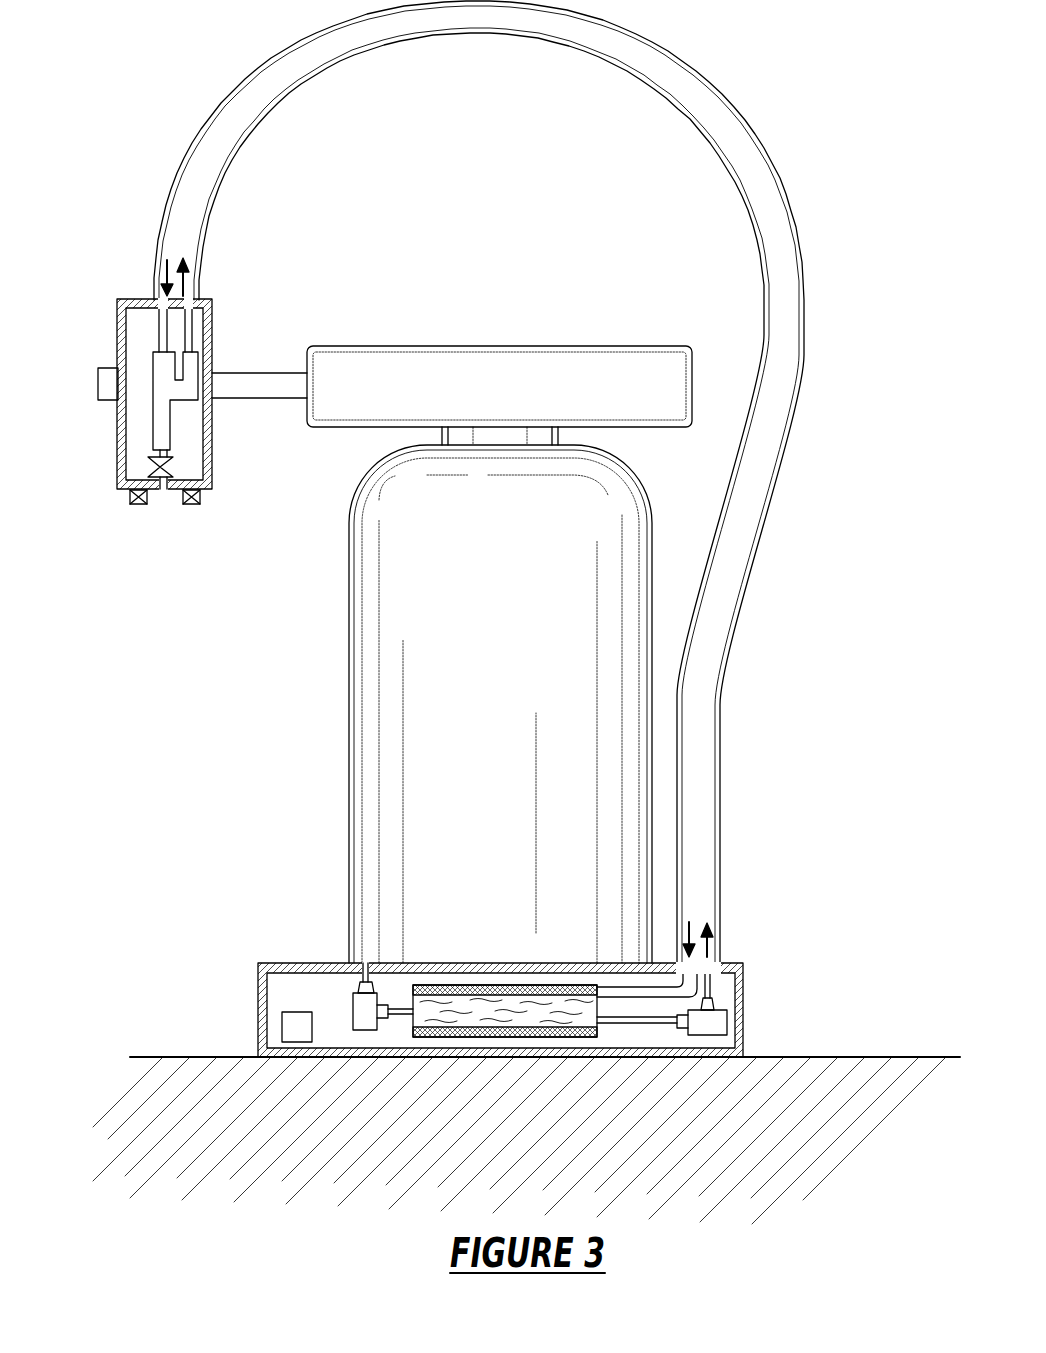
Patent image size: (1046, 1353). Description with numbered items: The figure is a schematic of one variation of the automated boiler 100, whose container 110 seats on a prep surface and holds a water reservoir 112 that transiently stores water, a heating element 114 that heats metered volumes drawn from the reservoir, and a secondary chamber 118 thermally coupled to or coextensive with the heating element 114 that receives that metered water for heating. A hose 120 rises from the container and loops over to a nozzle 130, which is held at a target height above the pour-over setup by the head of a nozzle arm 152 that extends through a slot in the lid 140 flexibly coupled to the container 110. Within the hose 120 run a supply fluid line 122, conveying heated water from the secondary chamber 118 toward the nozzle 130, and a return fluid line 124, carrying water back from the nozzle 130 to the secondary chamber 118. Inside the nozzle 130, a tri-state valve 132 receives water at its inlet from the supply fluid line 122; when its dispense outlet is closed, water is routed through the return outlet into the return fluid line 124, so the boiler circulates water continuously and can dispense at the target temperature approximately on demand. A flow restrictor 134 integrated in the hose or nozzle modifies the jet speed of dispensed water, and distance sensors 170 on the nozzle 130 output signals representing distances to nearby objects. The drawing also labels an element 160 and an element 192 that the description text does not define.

The automated boiler 100 is at (838, 100).
The container 110 is at (446, 704).
The water reservoir 112 is at (448, 796).
The heating element 114 is at (435, 1040).
The secondary chamber 118 is at (507, 1040).
The hose 120 is at (806, 304).
The supply fluid line 122 is at (158, 330).
The return fluid line 124 is at (194, 330).
The nozzle 130 is at (117, 468).
The valve 132 is at (153, 356).
The flow restrictor 134 is at (176, 461).
The lid 140 is at (614, 346).
The nozzle arm 152 is at (262, 372).
The controller 160 is at (282, 1025).
The distance sensors 170 is at (190, 506).
The actuator switch 192 is at (99, 386).